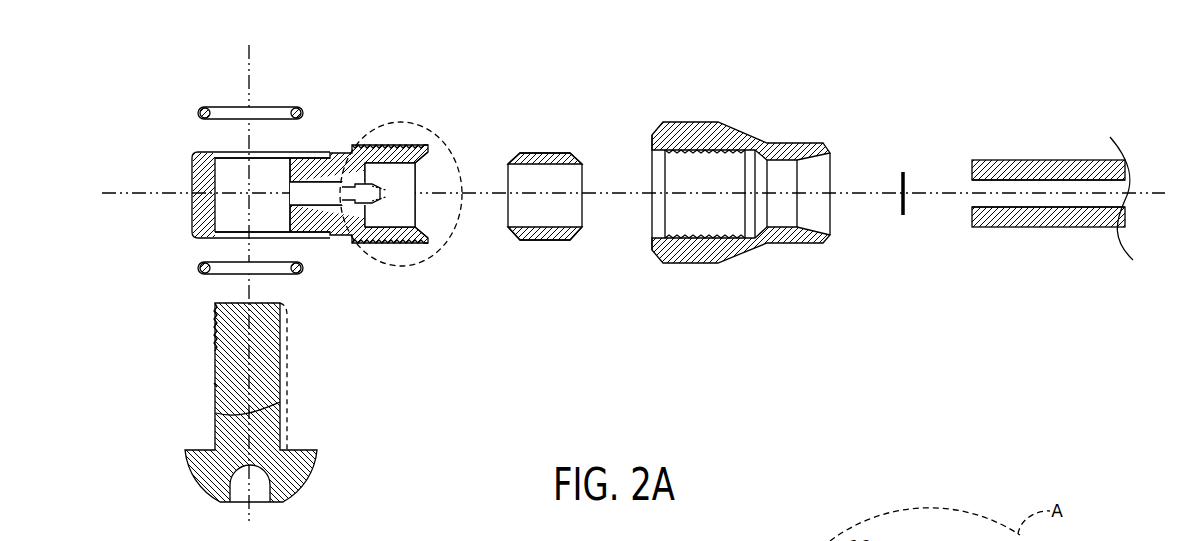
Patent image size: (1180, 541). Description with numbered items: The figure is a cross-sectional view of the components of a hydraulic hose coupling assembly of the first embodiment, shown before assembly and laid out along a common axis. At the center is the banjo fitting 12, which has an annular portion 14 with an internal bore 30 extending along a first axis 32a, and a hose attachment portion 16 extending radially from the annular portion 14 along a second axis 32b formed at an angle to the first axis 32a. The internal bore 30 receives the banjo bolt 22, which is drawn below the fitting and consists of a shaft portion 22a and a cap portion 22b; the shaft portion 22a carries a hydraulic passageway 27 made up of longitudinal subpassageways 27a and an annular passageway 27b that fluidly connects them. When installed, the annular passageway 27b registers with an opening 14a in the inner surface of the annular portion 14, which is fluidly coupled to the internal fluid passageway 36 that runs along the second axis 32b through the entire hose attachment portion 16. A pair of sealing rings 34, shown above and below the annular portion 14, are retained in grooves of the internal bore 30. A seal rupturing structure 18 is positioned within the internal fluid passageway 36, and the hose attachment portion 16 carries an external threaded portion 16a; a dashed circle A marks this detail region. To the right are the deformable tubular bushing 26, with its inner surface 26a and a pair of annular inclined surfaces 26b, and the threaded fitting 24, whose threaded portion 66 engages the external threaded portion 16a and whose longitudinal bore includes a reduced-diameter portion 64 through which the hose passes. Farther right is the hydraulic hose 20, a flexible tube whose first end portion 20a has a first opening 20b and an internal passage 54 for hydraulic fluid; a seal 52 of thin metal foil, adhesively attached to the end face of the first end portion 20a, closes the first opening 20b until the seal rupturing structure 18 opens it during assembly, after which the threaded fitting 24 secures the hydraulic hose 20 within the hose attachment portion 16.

The banjo fitting 12 is at (379, 91).
The annular portion 14 is at (191, 217).
The opening 14a is at (310, 181).
The hose attachment portion 16 is at (388, 211).
The external threaded portion 16a is at (388, 245).
The seal rupturing structure 18 is at (366, 186).
The hydraulic hose 20 is at (1033, 174).
The first end portion 20a is at (990, 160).
The first opening 20b is at (970, 207).
The banjo bolt 22 is at (261, 402).
The shaft portion 22a is at (215, 372).
The cap portion 22b is at (192, 478).
The threaded fitting 24 is at (768, 167).
The deformable tubular bushing 26 is at (554, 179).
The inner surface 26a is at (565, 165).
The annular inclined surfaces 26b is at (522, 239).
The hydraulic passageway 27 is at (305, 376).
The longitudinal subpassageways 27a is at (289, 360).
The annular passageway 27b is at (280, 402).
The internal bore 30 is at (237, 170).
The first axis 32a is at (248, 75).
The second axis 32b is at (140, 193).
The sealing rings 34 is at (200, 113).
The internal fluid passageway 36 is at (403, 203).
The seal 52 is at (900, 212).
The tube passage 54 is at (1087, 208).
The reduced portion 64 is at (822, 180).
The threaded portion 66 is at (683, 152).
The detail region A is at (417, 266).